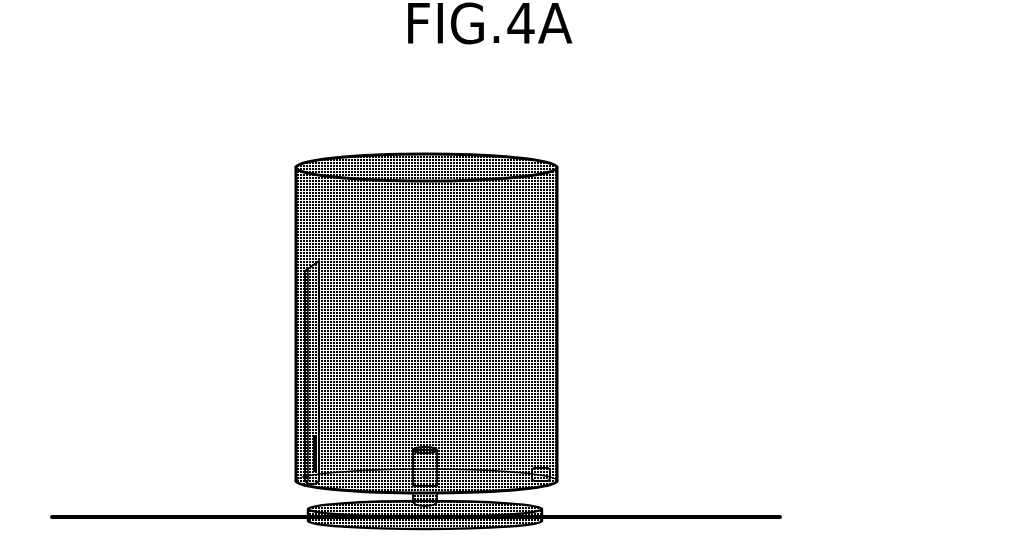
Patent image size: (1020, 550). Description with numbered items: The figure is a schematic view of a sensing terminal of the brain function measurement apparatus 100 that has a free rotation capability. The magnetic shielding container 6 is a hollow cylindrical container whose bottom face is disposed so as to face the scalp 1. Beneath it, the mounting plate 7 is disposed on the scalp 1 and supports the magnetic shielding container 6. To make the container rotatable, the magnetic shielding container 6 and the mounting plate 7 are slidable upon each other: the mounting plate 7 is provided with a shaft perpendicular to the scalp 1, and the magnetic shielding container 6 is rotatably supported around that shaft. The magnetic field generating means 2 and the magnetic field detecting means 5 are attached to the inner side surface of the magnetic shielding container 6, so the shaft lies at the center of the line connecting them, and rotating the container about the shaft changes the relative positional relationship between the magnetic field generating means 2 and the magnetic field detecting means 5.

The brain function measurement apparatus 100 is at (221, 151).
The magnetic shielding container 6 is at (557, 238).
The magnetic field detecting means 5 is at (308, 447).
The magnetic field generating means 2 is at (555, 460).
The mounting plate 7 is at (308, 510).
The scalp 1 is at (695, 515).